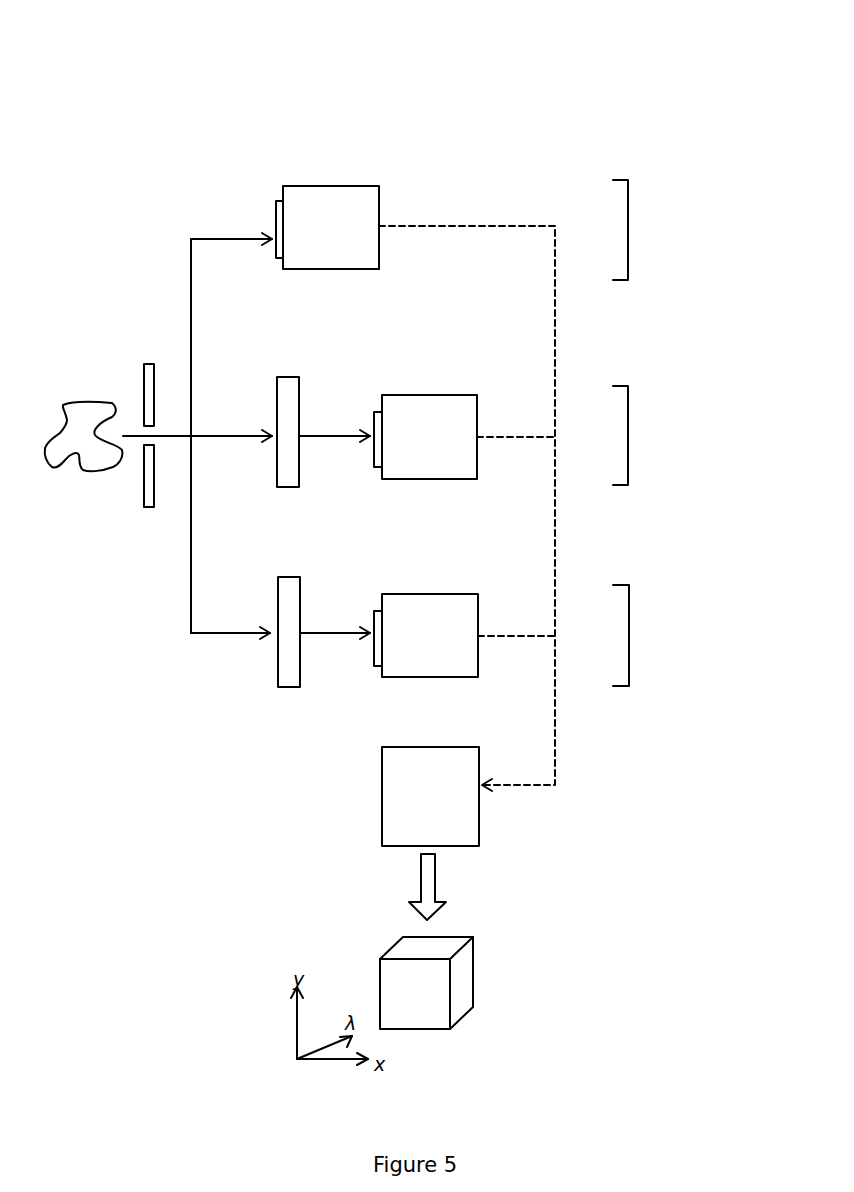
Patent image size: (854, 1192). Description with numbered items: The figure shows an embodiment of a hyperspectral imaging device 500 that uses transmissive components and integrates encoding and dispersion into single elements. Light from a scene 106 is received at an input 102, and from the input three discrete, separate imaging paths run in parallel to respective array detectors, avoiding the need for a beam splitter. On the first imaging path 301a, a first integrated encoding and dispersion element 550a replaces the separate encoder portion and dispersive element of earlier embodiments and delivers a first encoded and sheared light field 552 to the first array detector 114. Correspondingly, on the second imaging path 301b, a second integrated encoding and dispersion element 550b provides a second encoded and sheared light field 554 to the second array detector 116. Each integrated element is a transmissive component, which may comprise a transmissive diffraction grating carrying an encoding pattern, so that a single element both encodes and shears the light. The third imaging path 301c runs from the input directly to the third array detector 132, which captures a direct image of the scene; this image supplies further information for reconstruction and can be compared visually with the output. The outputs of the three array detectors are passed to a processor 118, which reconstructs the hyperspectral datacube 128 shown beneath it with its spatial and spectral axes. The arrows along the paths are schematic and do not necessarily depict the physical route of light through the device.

The hyperspectral imaging device 500 is at (546, 164).
The scene 106 is at (83, 403).
The input 102 is at (150, 364).
The first integrated encoding and dispersion element 550a is at (291, 377).
The second integrated encoding and dispersion element 550b is at (292, 688).
The first encoded and sheared light field 552 is at (338, 433).
The second encoded and sheared light field 554 is at (333, 633).
The third array detector 132 is at (349, 238).
The first array detector 114 is at (450, 448).
The second array detector 116 is at (450, 647).
The processor 118 is at (451, 809).
The first imaging path 301a is at (693, 252).
The second imaging path 301b is at (653, 435).
The third imaging path 301c is at (652, 635).
The hyperspectral datacube 128 is at (413, 1030).